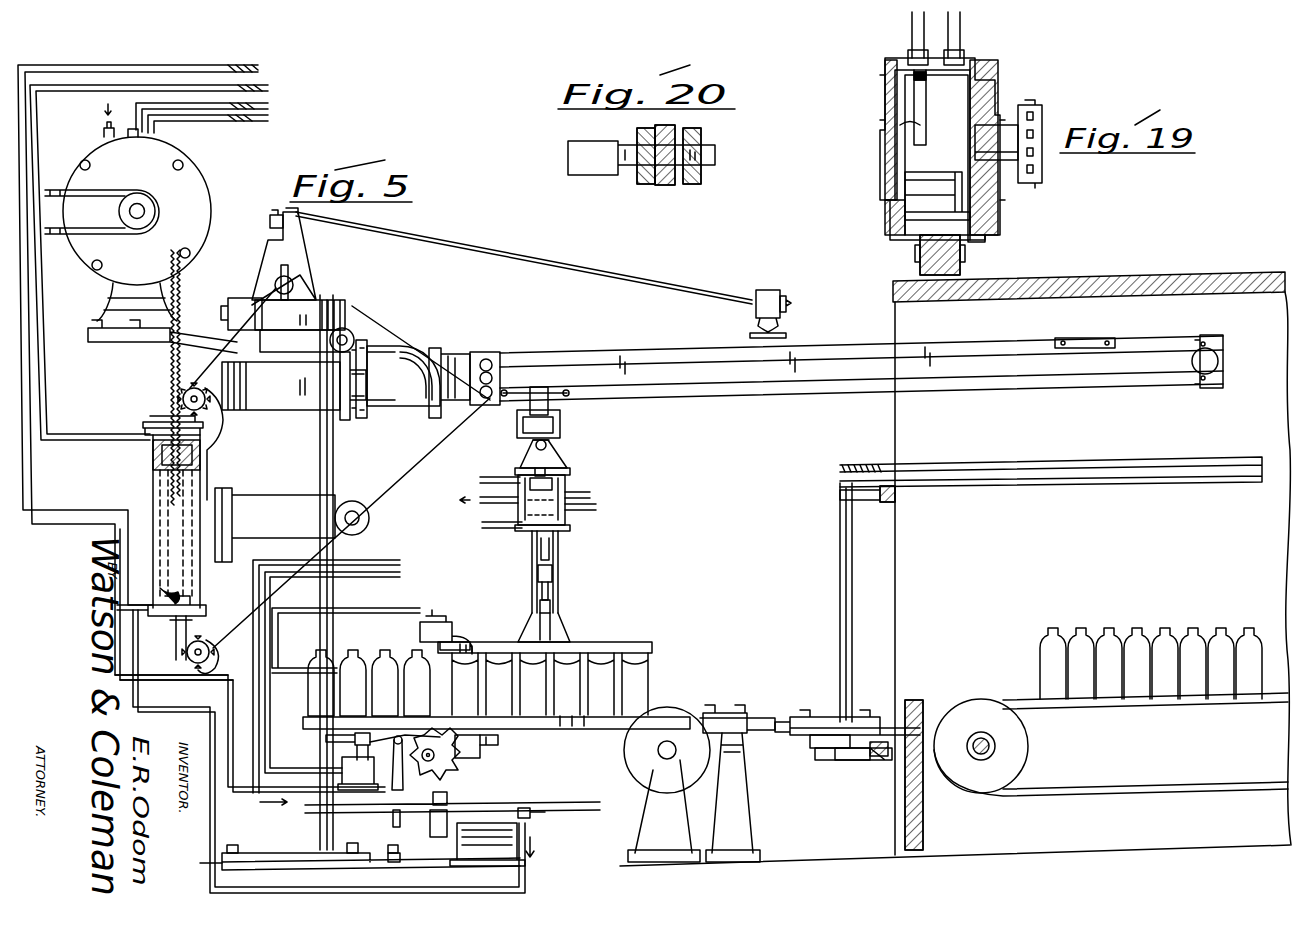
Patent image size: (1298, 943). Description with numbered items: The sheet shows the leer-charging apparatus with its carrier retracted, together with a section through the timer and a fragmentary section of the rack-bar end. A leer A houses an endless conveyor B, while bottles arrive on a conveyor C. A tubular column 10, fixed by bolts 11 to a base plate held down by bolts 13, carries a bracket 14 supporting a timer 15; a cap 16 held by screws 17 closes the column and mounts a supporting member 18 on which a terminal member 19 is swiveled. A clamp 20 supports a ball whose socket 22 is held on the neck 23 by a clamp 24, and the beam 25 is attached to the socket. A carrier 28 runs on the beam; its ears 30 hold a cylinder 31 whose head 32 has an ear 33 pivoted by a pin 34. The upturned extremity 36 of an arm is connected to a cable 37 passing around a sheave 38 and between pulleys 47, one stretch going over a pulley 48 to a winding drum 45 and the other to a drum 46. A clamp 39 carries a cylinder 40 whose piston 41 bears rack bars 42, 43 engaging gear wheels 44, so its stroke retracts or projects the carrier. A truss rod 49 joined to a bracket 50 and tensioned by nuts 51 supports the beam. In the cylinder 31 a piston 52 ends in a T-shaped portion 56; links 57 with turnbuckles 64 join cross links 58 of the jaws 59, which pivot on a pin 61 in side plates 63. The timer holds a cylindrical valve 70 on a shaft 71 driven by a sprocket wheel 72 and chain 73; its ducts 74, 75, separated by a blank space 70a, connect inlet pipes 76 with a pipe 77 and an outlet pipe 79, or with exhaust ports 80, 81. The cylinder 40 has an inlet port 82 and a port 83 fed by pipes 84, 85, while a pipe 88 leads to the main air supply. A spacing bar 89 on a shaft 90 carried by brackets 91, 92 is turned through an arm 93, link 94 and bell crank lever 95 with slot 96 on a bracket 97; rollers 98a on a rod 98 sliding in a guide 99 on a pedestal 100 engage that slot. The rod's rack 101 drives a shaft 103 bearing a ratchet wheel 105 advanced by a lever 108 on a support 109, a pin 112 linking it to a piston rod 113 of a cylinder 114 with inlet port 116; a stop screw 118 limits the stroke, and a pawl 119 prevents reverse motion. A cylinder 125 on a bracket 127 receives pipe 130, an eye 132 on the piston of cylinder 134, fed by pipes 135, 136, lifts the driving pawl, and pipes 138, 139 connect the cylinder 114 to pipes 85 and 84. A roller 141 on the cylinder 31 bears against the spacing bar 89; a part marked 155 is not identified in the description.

In FIG. 5, the column 10 is at (322, 480).
In FIG. 5, the bolts 11 is at (350, 860).
In FIG. 5, the bolts 13 is at (395, 863).
In FIG. 5, the bracket 14 is at (310, 312).
In FIG. 5, the timer 15 is at (210, 158).
In FIG. 19, the timer 15 is at (990, 70).
In FIG. 5, the cap 16 is at (240, 300).
In FIG. 5, the screws 17 is at (350, 304).
In FIG. 5, the supporting member 18 is at (268, 256).
In FIG. 5, the terminal member 19 is at (302, 209).
In FIG. 5, the clamp 20 is at (305, 395).
In FIG. 5, the socket 22 is at (395, 346).
In FIG. 5, the neck 23 is at (358, 402).
In FIG. 5, the clamp 24 is at (385, 340).
In FIG. 5, the beam 25 is at (950, 346).
In FIG. 5, the carrier 28 is at (565, 435).
In FIG. 5, the ears 30 is at (560, 440).
In FIG. 5, the cylinder 31 is at (568, 478).
In FIG. 5, the cylinder head 32 is at (580, 468).
In FIG. 5, the ear 33 is at (525, 465).
In FIG. 5, the pivot pin 34 is at (538, 425).
In FIG. 5, the upturned extremity of arm 36 is at (538, 388).
In FIG. 5, the cable 37 is at (436, 348).
In FIG. 5, the pulley or sheave 38 is at (1224, 358).
In FIG. 5, the clamp 39 is at (268, 515).
In FIG. 5, the cylinder 40 is at (150, 494).
In FIG. 5, the piston 41 is at (153, 458).
In FIG. 5, the rack bar 42 is at (178, 652).
In FIG. 5, the rack bar 43 is at (172, 362).
In FIG. 5, the gear wheels 44 is at (183, 397).
In FIG. 5, the winding drum 45 is at (338, 468).
In FIG. 5, the winding drum 46 is at (212, 658).
In FIG. 5, the pulleys 47 is at (500, 365).
In FIG. 5, the pulley 48 is at (294, 280).
In FIG. 5, the truss rod 49 is at (528, 262).
In FIG. 5, the bracket 50 is at (758, 326).
In FIG. 5, the nuts 51 is at (275, 213).
In FIG. 5, the piston 52 is at (552, 548).
In FIG. 5, the T-shaped portion 56 is at (538, 556).
In FIG. 5, the links 57 is at (790, 304).
In FIG. 5, the cross links 58 is at (552, 608).
In FIG. 5, the jaws 59 is at (598, 640).
In FIG. 5, the pivot pin 61 is at (530, 622).
In FIG. 5, the side plates 63 is at (532, 594).
In FIG. 5, the turnbuckles 64 is at (554, 572).
In FIG. 19, the cylindrical valve 70 is at (960, 100).
In FIG. 19, the blank space 70a is at (915, 155).
In FIG. 5, the shaft 71 is at (128, 212).
In FIG. 19, the shaft 71 is at (995, 136).
In FIG. 5, the sprocket wheel 72 is at (152, 206).
In FIG. 19, the sprocket wheel 72 is at (1040, 115).
In FIG. 5, the sprocket chain 73 is at (95, 190).
In FIG. 19, the duct 74 is at (905, 178).
In FIG. 19, the duct 75 is at (920, 106).
In FIG. 5, the inlet pipes 76 is at (102, 132).
In FIG. 5, the pipe 77 is at (240, 124).
In FIG. 19, the pipe 77 is at (962, 30).
In FIG. 5, the outlet pipe 79 is at (270, 107).
In FIG. 19, the outlet pipe 79 is at (910, 30).
In FIG. 19, the exhaust port 80 is at (985, 245).
In FIG. 19, the exhaust port 81 is at (908, 240).
In FIG. 5, the air inlet port 82 is at (152, 425).
In FIG. 5, the port 83 is at (158, 598).
In FIG. 5, the pipe 84 is at (262, 90).
In FIG. 5, the pipe 85 is at (244, 66).
In FIG. 5, the pipe 88 is at (480, 500).
In FIG. 5, the spacing bar 89 is at (998, 460).
In FIG. 5, the shaft 90 is at (840, 650).
In FIG. 5, the bracket 91 is at (872, 504).
In FIG. 5, the bracket 92 is at (858, 762).
In FIG. 5, the arm 93 is at (800, 738).
In FIG. 5, the link 94 is at (806, 714).
In FIG. 5, the bell crank lever 95 is at (886, 705).
In FIG. 20, the bell crank lever 95 is at (710, 176).
In FIG. 20, the slot 96 is at (692, 188).
In FIG. 5, the bracket 97 is at (820, 762).
In FIG. 5, the rod 98 is at (546, 735).
In FIG. 20, the rod 98 is at (716, 150).
In FIG. 20, the rollers 98a is at (672, 125).
In FIG. 5, the guide 99 is at (728, 712).
In FIG. 5, the pedestal 100 is at (742, 818).
In FIG. 5, the rack 101 is at (492, 740).
In FIG. 5, the shaft 103 is at (420, 735).
In FIG. 5, the ratchet wheel 105 is at (446, 760).
In FIG. 5, the lever 108 is at (392, 822).
In FIG. 5, the bracket or support 109 is at (404, 852).
In FIG. 5, the pin 112 is at (385, 815).
In FIG. 5, the piston rod 113 is at (432, 842).
In FIG. 5, the cylinder 114 is at (470, 830).
In FIG. 5, the air inlet port 116 is at (405, 730).
In FIG. 5, the stop screw 118 is at (545, 820).
In FIG. 5, the pawl 119 is at (444, 732).
In FIG. 5, the cylinder 125 is at (443, 620).
In FIG. 5, the bracket 127 is at (476, 756).
In FIG. 5, the pipe 130 is at (402, 612).
In FIG. 5, the eye 132 is at (326, 745).
In FIG. 5, the cylinder 134 is at (358, 773).
In FIG. 5, the pipe 135 is at (378, 560).
In FIG. 5, the pipe 136 is at (354, 576).
In FIG. 5, the pipe 138 is at (158, 678).
In FIG. 5, the pipe 139 is at (156, 712).
In FIG. 5, the roller 141 is at (552, 468).
In FIG. 5, the stop 155 is at (1086, 340).
In FIG. 5, the leer A is at (1092, 563).
In FIG. 5, the endless conveyor B is at (955, 747).
In FIG. 5, the endless conveyor C is at (600, 745).